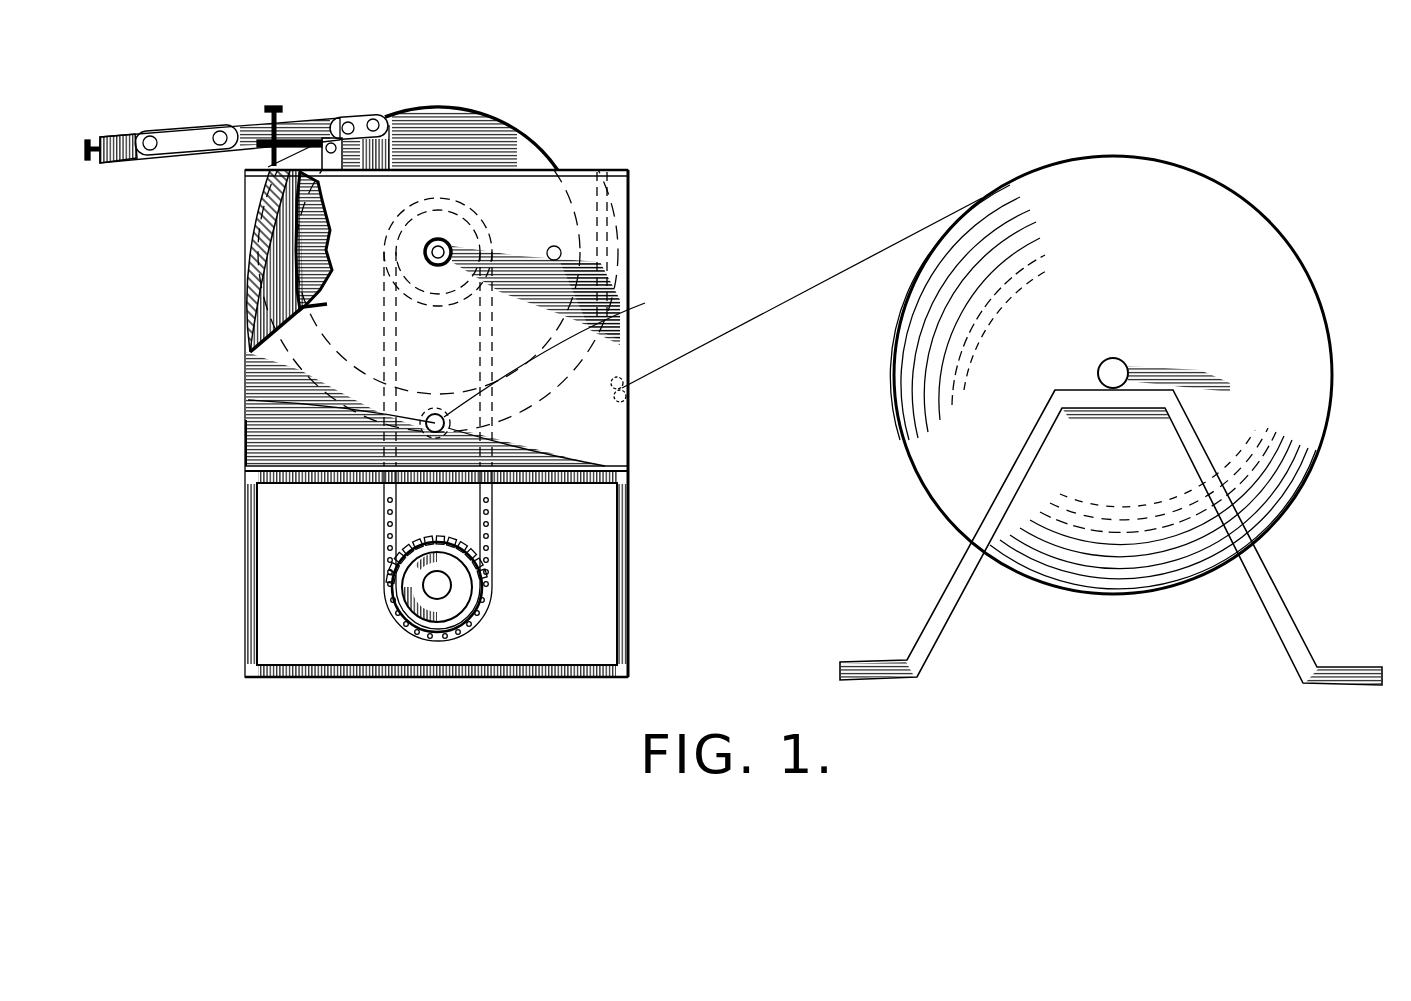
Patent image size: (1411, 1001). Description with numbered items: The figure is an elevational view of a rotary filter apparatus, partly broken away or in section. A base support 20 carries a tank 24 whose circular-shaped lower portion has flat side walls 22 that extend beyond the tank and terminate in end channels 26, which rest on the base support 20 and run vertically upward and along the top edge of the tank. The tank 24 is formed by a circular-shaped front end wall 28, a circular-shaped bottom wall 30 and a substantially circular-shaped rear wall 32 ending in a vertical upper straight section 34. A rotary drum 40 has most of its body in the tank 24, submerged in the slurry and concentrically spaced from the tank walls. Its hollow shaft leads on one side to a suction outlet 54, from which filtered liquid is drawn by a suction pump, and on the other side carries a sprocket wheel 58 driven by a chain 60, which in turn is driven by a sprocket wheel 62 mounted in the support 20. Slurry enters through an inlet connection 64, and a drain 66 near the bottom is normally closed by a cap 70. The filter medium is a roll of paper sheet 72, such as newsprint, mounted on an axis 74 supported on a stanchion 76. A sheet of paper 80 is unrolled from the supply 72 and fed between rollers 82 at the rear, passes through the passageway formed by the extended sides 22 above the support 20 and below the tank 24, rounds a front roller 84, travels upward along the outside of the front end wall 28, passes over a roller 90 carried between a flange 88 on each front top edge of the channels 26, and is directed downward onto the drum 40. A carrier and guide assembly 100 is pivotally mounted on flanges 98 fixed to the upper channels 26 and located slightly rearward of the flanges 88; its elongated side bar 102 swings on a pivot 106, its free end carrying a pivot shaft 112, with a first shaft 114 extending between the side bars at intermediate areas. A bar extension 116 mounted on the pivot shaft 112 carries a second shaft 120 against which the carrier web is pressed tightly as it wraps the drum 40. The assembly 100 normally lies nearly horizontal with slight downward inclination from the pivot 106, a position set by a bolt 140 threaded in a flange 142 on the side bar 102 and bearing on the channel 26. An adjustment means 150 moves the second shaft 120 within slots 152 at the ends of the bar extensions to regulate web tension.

The base support 20 is at (620, 567).
The flat side walls 22 is at (248, 425).
The tank 24 is at (250, 369).
The end channels 26 is at (570, 169).
The front end wall 28 is at (255, 253).
The bottom wall 30 is at (620, 469).
The rear wall 32 is at (551, 374).
The vertical upper straight section 34 is at (600, 198).
The rotary drum 40 is at (496, 150).
The suction outlet 54 is at (562, 252).
The sprocket wheel 58 is at (452, 251).
The chain 60 is at (493, 532).
The sprocket wheel 62 is at (443, 538).
The inlet connection 64 is at (592, 272).
The drain 66 is at (600, 338).
The cap 70 is at (262, 406).
The roll of paper sheet 72 is at (1256, 260).
The axis 74 is at (1125, 370).
The stanchion 76 is at (918, 665).
The sheet of paper 80 is at (252, 320).
The rollers 82 is at (622, 388).
The roller 84 is at (246, 450).
The flange 88 is at (350, 123).
The roller 90 is at (333, 137).
The flanges 98 is at (484, 115).
The carrier and guide assembly 100 is at (203, 111).
The side bar 102 is at (245, 130).
The pivots 106 is at (392, 128).
The pivot shaft 112 is at (225, 126).
The first shaft 114 is at (378, 121).
The bar extension 116 is at (165, 152).
The second shaft 120 is at (150, 136).
The bolt 140 is at (270, 104).
The flange 142 is at (258, 150).
The adjustment means 150 is at (120, 134).
The slots 152 is at (118, 162).